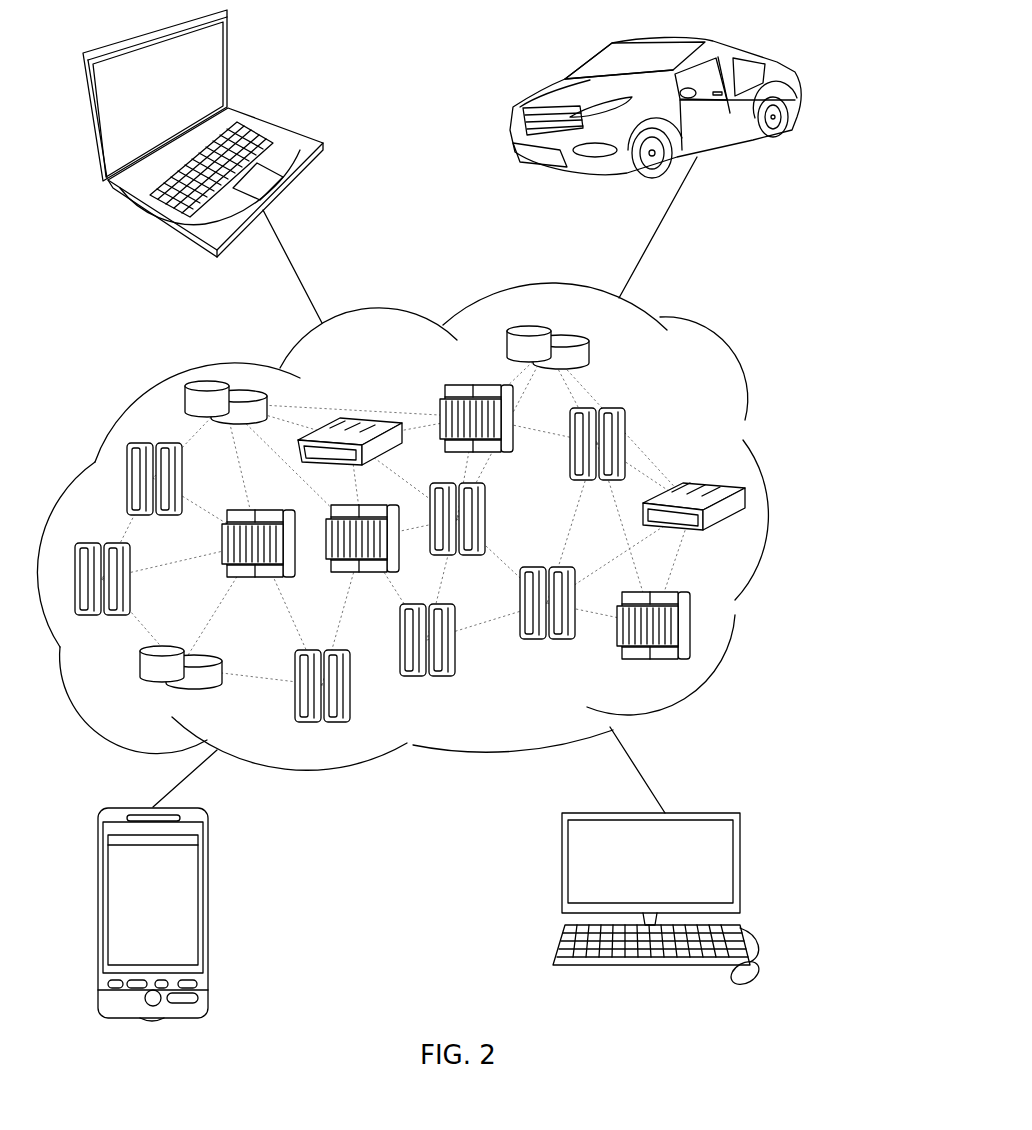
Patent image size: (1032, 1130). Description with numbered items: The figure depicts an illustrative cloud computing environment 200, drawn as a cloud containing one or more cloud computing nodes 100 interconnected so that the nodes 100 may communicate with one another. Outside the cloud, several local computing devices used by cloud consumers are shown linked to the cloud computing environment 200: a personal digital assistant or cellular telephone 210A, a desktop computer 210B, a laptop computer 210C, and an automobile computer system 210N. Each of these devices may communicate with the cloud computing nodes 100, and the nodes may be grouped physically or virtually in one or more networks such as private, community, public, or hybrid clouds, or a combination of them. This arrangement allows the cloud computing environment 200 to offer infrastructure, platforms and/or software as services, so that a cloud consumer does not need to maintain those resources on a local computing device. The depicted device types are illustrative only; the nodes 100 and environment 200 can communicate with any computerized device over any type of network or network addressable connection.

The cloud computing node 100 is at (718, 468).
The cloud computing environment 200 is at (725, 347).
The personal digital assistant (PDA) or cellular telephone 210A is at (203, 830).
The desktop computer 210B is at (740, 830).
The laptop computer 210C is at (283, 131).
The automobile computer system 210N is at (755, 52).